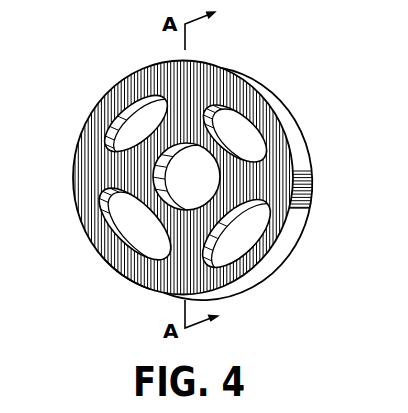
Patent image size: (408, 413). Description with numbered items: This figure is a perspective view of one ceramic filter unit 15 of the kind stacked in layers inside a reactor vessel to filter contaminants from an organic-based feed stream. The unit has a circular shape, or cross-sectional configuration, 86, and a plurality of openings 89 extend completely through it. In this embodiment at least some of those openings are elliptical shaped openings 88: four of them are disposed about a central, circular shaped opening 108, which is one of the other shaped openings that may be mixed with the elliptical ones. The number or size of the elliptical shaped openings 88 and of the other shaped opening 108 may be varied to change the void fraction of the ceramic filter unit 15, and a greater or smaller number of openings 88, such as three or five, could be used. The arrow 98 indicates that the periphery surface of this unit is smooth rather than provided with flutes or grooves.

The circular shape 86 is at (283, 100).
The elliptical shaped openings 88 is at (130, 122).
The openings 89 is at (240, 247).
The smooth periphery surface 98 is at (126, 278).
The other shaped opening 108 is at (205, 188).
The ceramic filter unit 15 is at (318, 206).